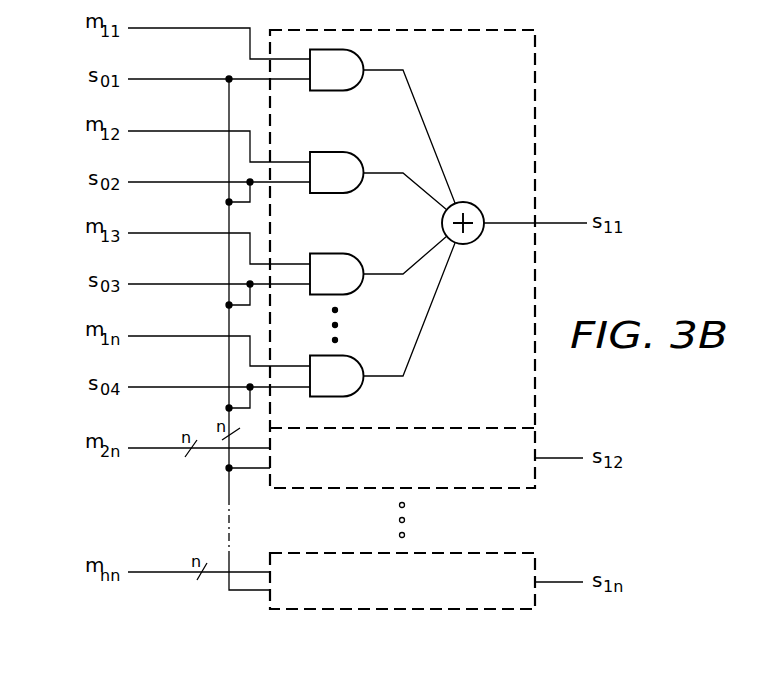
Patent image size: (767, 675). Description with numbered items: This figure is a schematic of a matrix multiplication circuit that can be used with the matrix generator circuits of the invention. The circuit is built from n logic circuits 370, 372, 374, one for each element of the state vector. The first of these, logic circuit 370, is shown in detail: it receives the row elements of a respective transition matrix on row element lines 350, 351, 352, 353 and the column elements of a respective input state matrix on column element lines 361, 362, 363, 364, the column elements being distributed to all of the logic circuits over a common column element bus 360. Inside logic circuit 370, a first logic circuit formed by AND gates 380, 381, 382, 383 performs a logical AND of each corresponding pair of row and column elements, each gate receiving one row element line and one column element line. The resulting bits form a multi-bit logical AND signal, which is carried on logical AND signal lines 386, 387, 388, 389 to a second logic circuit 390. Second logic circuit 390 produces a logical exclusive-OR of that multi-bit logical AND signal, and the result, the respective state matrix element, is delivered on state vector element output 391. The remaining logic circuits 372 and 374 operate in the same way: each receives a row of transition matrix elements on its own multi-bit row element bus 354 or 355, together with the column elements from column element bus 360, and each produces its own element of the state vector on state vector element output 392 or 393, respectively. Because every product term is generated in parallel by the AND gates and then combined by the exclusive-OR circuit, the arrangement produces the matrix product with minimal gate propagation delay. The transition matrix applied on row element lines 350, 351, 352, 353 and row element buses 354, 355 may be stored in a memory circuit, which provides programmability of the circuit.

The row element line 350 is at (175, 29).
The row element line 351 is at (175, 132).
The row element line 352 is at (175, 234).
The row element line 353 is at (175, 337).
The row element bus 354 is at (142, 449).
The row element bus 355 is at (142, 571).
The column element bus 360 is at (226, 490).
The column element line 361 is at (170, 81).
The column element line 362 is at (170, 184).
The column element line 363 is at (170, 286).
The column element line 364 is at (170, 389).
The logic circuit 370 is at (537, 105).
The logic circuit 372 is at (383, 469).
The logic circuit 374 is at (383, 591).
The first logic circuit 380 is at (335, 91).
The first logic circuit 381 is at (335, 194).
The first logic circuit 382 is at (322, 296).
The first logic circuit 383 is at (357, 358).
The logical AND signal line 386 is at (428, 132).
The logical AND signal line 387 is at (381, 172).
The logical AND signal line 388 is at (381, 273).
The logical AND signal line 389 is at (435, 300).
The second logic circuit 390 is at (476, 203).
The state vector element output 391 is at (558, 221).
The state vector element output 392 is at (557, 457).
The state vector element output 393 is at (557, 581).